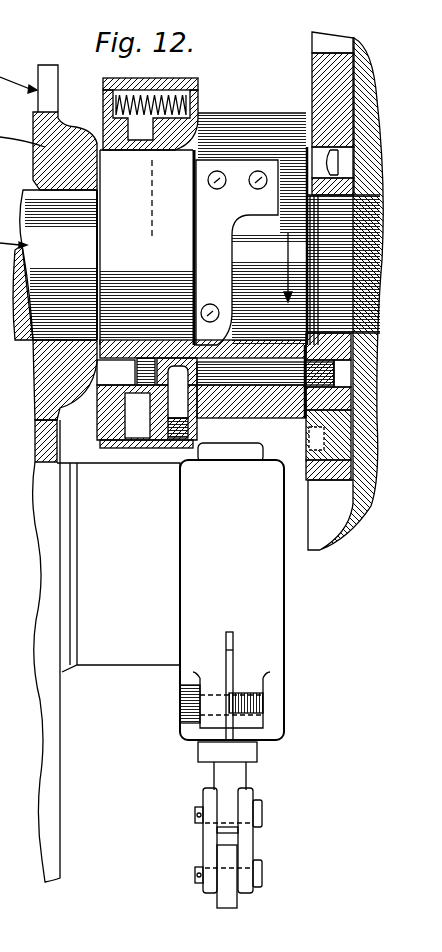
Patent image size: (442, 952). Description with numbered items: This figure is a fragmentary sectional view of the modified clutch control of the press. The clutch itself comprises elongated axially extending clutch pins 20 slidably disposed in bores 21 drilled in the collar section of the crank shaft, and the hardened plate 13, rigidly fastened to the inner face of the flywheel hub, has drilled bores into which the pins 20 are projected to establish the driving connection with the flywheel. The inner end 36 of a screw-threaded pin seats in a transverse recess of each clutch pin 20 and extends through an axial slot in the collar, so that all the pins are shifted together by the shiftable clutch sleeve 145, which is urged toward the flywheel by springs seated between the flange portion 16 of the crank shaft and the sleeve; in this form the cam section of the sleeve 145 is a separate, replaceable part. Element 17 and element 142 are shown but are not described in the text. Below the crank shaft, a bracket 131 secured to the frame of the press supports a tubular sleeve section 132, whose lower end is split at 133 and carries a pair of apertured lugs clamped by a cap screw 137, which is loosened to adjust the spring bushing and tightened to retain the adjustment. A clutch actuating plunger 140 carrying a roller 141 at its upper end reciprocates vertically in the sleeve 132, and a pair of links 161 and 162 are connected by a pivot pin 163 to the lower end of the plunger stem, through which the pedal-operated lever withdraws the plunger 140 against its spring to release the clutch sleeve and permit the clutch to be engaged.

The hardened plate 13 is at (312, 70).
The flange portion of the crank shaft 16 is at (65, 127).
The cap with spring 17 is at (147, 80).
The clutch pins 20 is at (325, 316).
The bores 21 is at (364, 133).
The inner end of screw-threaded pin 36 is at (274, 373).
The bracket 131 is at (140, 650).
The tubular sleeve section 132 is at (270, 594).
The split 133 is at (228, 670).
The cap screw 137 is at (182, 707).
The clutch actuating plunger 140 is at (237, 168).
The roller 141 is at (245, 452).
The rivets 142 is at (253, 185).
The shiftable clutch sleeve 145 is at (100, 112).
The link 161 is at (208, 842).
The link 162 is at (245, 840).
The pivot pin 163 is at (262, 808).